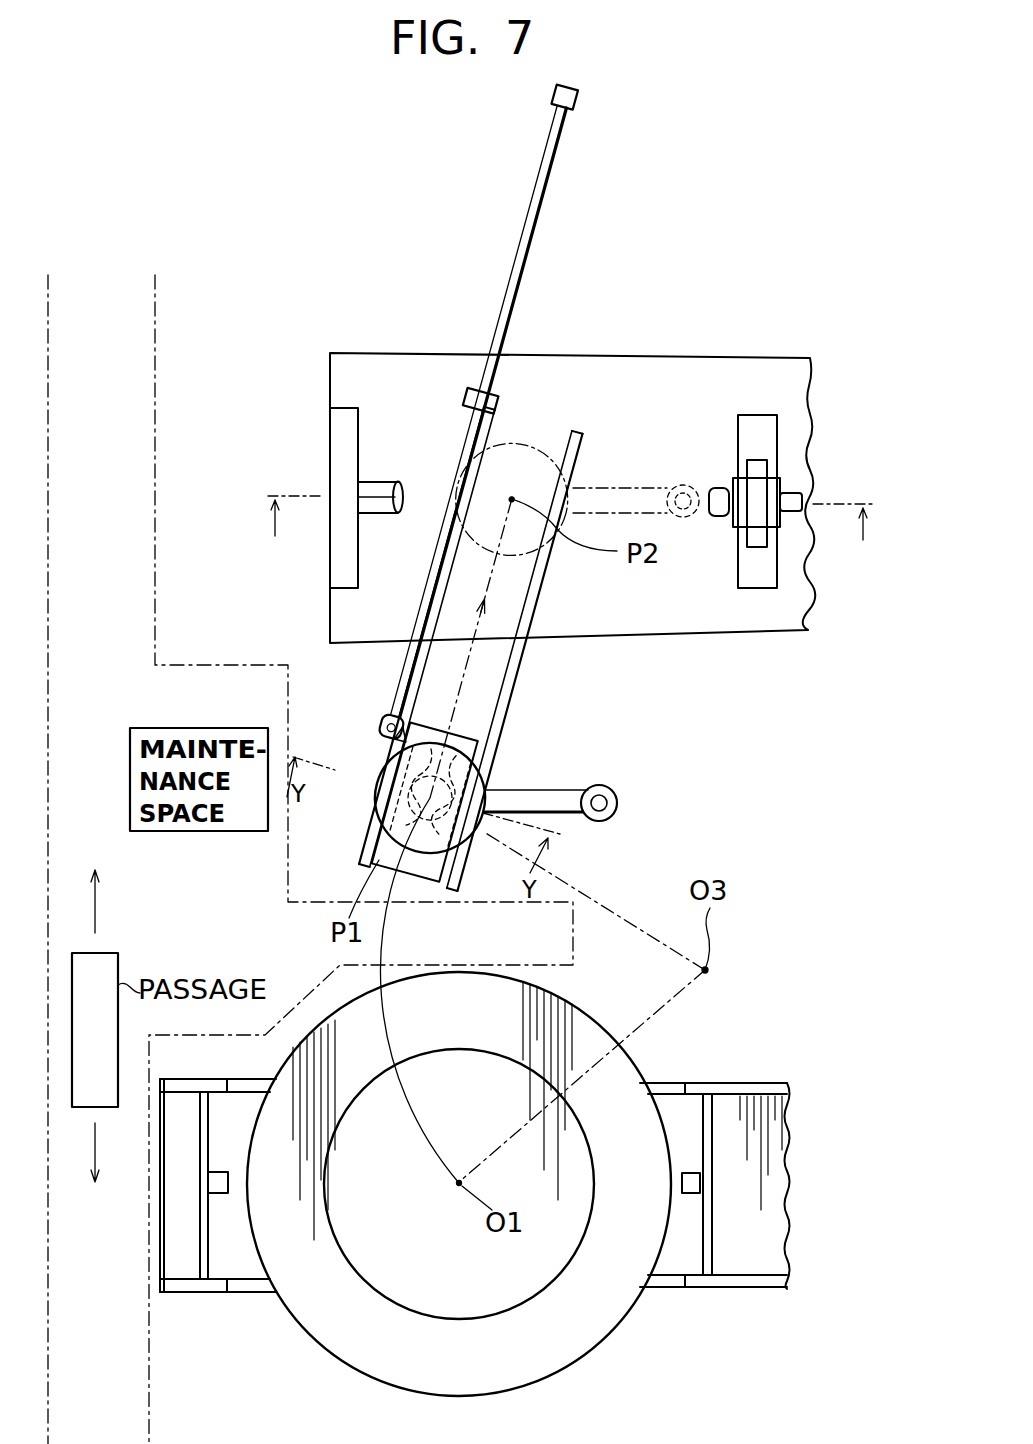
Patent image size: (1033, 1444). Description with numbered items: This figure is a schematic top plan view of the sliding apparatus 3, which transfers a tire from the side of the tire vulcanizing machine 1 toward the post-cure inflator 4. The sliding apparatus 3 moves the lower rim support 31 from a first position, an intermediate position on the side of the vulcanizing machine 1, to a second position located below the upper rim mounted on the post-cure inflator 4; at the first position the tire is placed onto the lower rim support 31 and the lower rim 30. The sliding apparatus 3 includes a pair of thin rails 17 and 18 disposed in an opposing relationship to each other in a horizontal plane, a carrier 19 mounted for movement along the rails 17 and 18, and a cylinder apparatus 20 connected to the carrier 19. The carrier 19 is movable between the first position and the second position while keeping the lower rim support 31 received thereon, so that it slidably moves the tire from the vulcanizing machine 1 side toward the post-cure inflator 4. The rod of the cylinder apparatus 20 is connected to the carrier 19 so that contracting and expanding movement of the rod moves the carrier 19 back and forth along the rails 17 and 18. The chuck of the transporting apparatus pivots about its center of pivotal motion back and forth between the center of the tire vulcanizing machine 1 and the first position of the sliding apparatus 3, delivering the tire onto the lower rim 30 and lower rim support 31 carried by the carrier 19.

The tire vulcanizing machine 1 is at (803, 1181).
The sliding apparatus 3 is at (528, 669).
The post-cure inflator 4 is at (811, 401).
The rail 17 is at (503, 703).
The rail 18 is at (400, 692).
The carrier 19 is at (463, 738).
The cylinder apparatus 20 is at (520, 227).
The lower rim 30 is at (504, 788).
The lower rim support 31 is at (599, 803).